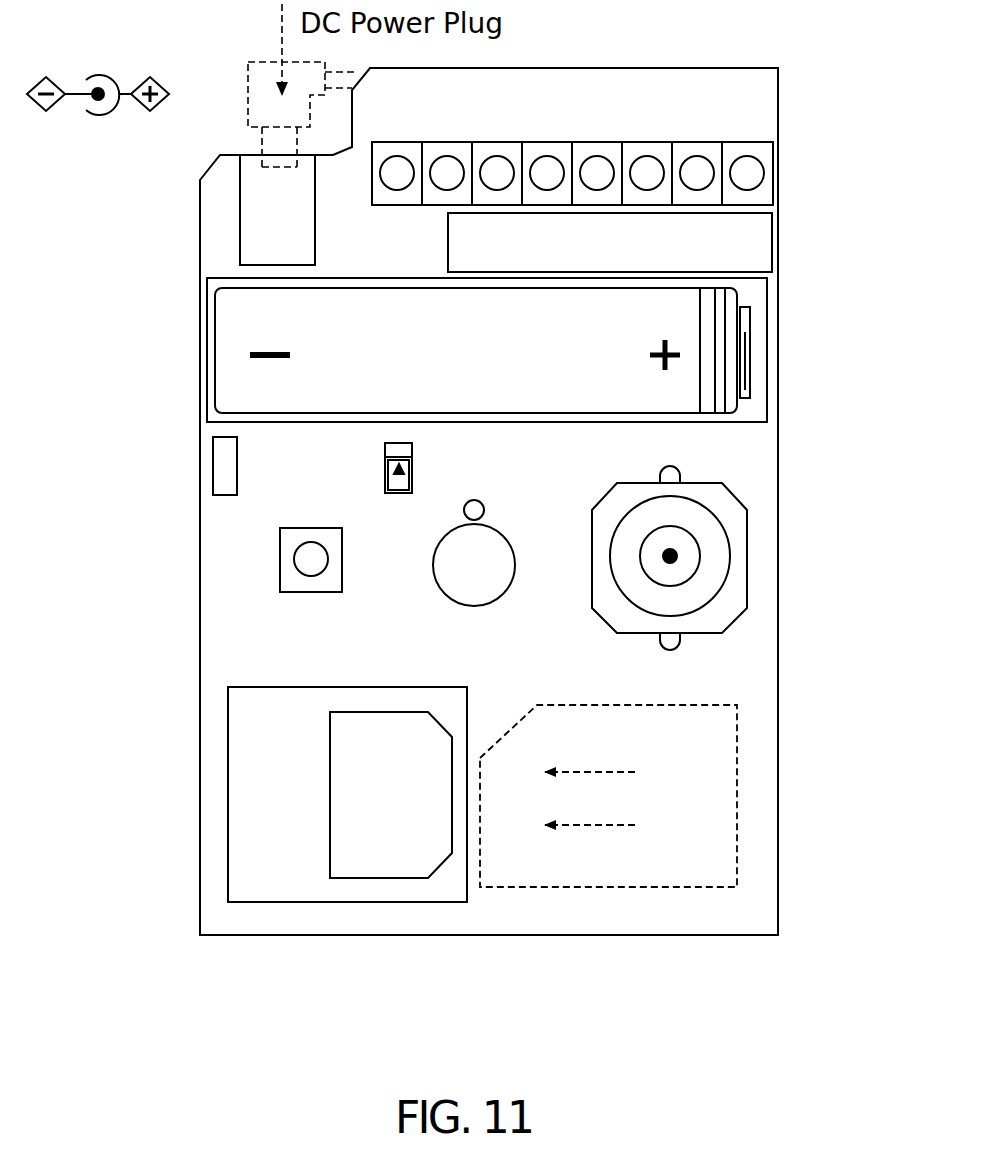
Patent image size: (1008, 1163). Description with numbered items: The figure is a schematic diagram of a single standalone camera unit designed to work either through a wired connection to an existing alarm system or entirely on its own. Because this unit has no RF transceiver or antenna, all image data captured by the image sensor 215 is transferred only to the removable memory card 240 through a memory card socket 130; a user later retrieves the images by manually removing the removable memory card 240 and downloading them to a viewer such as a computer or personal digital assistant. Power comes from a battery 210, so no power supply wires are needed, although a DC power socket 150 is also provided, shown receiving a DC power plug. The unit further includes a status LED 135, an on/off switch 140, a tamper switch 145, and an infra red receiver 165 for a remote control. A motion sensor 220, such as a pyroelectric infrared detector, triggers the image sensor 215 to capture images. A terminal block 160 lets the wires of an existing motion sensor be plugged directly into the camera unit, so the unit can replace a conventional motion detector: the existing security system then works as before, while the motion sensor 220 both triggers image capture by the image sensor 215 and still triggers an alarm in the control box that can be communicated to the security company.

The memory card socket 130 is at (308, 828).
The status LED 135 is at (488, 512).
The on/off switch 140 is at (340, 480).
The tamper switch 145 is at (213, 467).
The DC power socket 150 is at (236, 211).
The terminal block 160 is at (773, 178).
The infra red receiver 165 is at (265, 580).
The battery 210 is at (233, 331).
The image sensor 215 is at (747, 553).
The motion sensor 220 is at (438, 593).
The removable memory card 240 is at (720, 877).